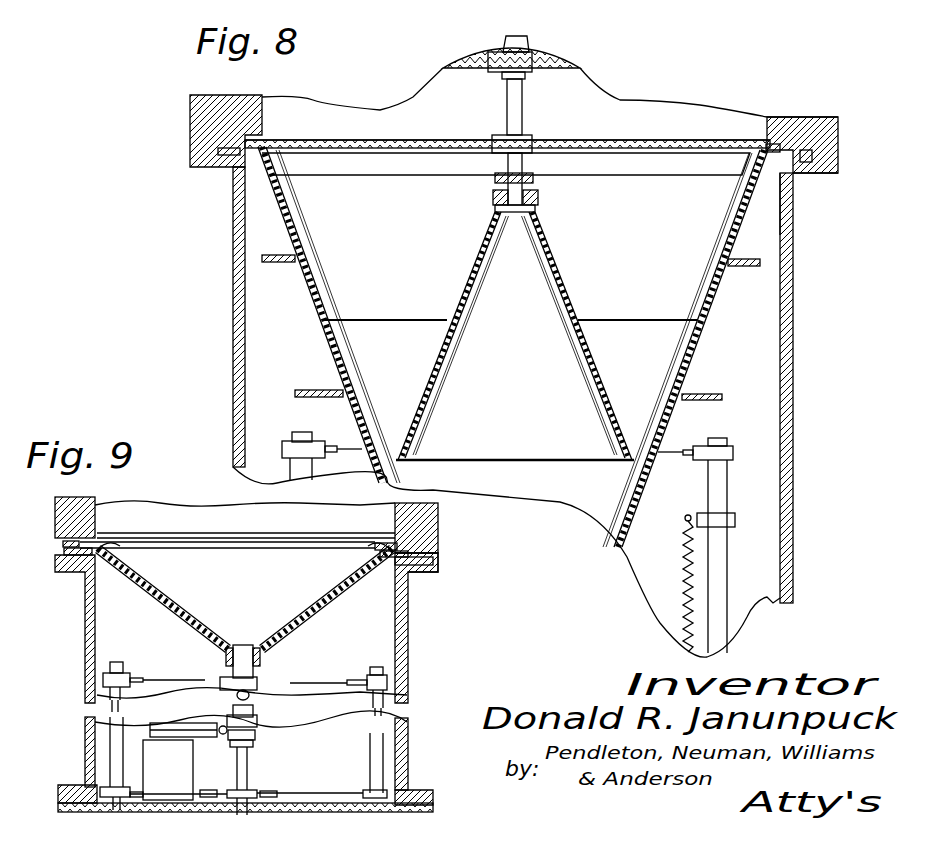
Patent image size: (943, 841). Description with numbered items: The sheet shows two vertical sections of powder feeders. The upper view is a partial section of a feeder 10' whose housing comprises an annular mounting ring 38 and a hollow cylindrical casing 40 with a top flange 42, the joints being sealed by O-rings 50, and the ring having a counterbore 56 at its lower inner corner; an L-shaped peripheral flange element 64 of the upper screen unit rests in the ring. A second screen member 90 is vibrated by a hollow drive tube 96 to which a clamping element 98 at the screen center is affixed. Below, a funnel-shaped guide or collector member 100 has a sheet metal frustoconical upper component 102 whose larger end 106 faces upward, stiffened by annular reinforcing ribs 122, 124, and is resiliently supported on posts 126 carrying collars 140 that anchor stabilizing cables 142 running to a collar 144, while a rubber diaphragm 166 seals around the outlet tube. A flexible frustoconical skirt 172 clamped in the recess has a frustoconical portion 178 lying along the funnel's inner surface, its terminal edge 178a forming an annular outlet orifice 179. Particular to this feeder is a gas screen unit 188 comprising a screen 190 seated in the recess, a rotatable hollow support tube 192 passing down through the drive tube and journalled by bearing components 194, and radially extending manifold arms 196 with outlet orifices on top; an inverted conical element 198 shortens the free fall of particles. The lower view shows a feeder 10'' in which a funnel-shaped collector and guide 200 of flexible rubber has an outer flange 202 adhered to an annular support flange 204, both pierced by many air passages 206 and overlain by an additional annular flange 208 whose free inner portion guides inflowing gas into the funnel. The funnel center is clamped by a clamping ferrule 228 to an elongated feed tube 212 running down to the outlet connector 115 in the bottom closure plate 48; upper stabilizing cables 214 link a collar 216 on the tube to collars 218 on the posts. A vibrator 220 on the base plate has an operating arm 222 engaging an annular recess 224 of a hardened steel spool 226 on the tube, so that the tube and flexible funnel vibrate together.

In FIG. 8, the feeder 10' is at (461, 362).
In FIG. 9, the feeder 10'' is at (281, 643).
In FIG. 8, the annular mounting ring 38 is at (787, 117).
In FIG. 9, the annular mounting ring 38 is at (442, 535).
In FIG. 8, the hollow cylindrical casing 40 is at (795, 330).
In FIG. 9, the hollow cylindrical casing 40 is at (408, 615).
In FIG. 8, the top flange 42 is at (838, 173).
In FIG. 9, the top flange 42 is at (425, 572).
In FIG. 9, the bottom closure plate 48 is at (433, 808).
In FIG. 8, the O-ring 50 is at (815, 156).
In FIG. 8, the counterbore 56 is at (762, 147).
In FIG. 9, the counterbore 56 is at (420, 542).
In FIG. 8, the annular peripheral flange element 64 is at (800, 137).
In FIG. 8, the second screen member 90 is at (572, 73).
In FIG. 8, the hollow drive tube 96 is at (525, 42).
In FIG. 8, the clamping element 98 is at (532, 58).
In FIG. 8, the funnel-shaped guide or collector member 100 is at (730, 290).
In FIG. 8, the hollow frustoconical upper component 102 is at (695, 356).
In FIG. 8, the larger end 106 is at (772, 170).
In FIG. 9, the outlet connector 115 is at (330, 785).
In FIG. 8, the annular reinforcing rib 122 is at (745, 262).
In FIG. 8, the annular reinforcing rib 124 is at (693, 394).
In FIG. 8, the post 126 is at (733, 487).
In FIG. 9, the post 126 is at (110, 662).
In FIG. 9, the collar 140 is at (382, 780).
In FIG. 9, the stabilizing wire or cable 142 is at (330, 778).
In FIG. 9, the collar 144 is at (255, 773).
In FIG. 9, the rubber diaphragm 166 is at (216, 790).
In FIG. 8, the flexible frustoconical skirt 172 is at (308, 224).
In FIG. 8, the frustoconical portion 178 is at (325, 276).
In FIG. 8, the terminal edge 178a is at (605, 322).
In FIG. 8, the annular outlet orifice 179 is at (330, 322).
In FIG. 8, the gas screen unit 188 is at (626, 132).
In FIG. 8, the screen 190 is at (683, 140).
In FIG. 9, the screen 190 is at (110, 787).
In FIG. 8, the rotatable hollow support tube 192 is at (515, 98).
In FIG. 8, the bearing component 194 is at (525, 135).
In FIG. 8, the manifold arm 196 is at (425, 173).
In FIG. 8, the inverted conical element 198 is at (565, 282).
In FIG. 9, the funnel-shaped collector and guide 200 is at (300, 605).
In FIG. 9, the outer flange 202 is at (430, 557).
In FIG. 9, the annular support flange 204 is at (420, 573).
In FIG. 9, the air passage 206 is at (97, 555).
In FIG. 9, the additional annular flange 208 is at (387, 545).
In FIG. 9, the elongated feed tube 212 is at (255, 700).
In FIG. 9, the stabilizing wire or cable 214 is at (331, 682).
In FIG. 9, the collar 216 is at (257, 683).
In FIG. 9, the collar 218 is at (408, 683).
In FIG. 9, the vibrator 220 is at (157, 752).
In FIG. 9, the operating arm 222 is at (206, 722).
In FIG. 9, the annular recess 224 is at (256, 732).
In FIG. 9, the hardened steel spool 226 is at (256, 750).
In FIG. 9, the clamping ferrule 228 is at (255, 658).